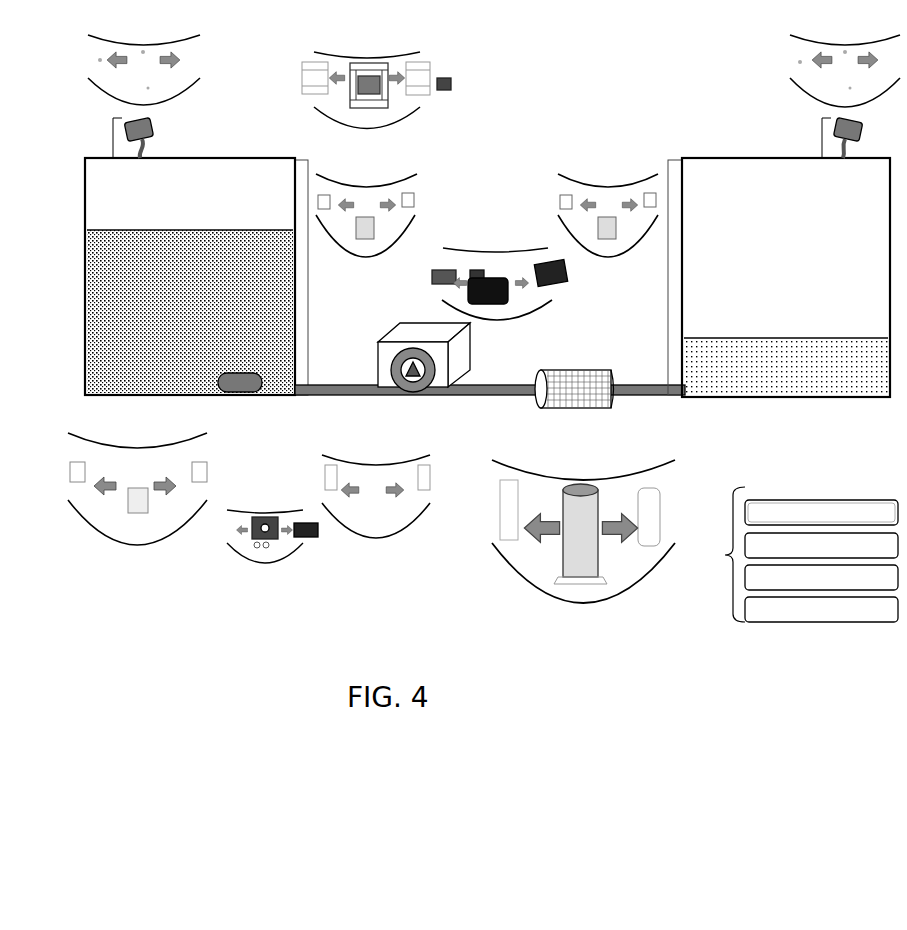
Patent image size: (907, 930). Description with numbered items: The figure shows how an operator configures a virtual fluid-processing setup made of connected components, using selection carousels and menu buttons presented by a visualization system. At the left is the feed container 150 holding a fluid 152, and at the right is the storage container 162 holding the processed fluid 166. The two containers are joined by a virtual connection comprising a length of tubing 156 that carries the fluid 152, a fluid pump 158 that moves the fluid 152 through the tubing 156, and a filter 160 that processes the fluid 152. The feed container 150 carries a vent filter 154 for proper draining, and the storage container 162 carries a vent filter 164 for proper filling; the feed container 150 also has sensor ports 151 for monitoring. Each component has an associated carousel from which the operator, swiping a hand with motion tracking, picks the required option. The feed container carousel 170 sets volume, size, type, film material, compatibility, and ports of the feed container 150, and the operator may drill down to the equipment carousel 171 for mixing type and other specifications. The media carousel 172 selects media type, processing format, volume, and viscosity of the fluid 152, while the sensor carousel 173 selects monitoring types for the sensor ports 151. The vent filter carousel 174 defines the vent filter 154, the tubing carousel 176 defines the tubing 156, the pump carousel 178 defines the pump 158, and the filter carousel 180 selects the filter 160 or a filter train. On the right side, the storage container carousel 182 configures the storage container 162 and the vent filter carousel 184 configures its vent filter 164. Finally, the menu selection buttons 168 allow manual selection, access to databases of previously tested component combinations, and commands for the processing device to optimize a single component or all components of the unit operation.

The feed container 150 is at (310, 275).
The sensor ports 151 is at (242, 394).
The fluid 152 is at (137, 334).
The vent filter 154 is at (113, 135).
The tubing 156 is at (362, 400).
The fluid pump 158 is at (410, 316).
The filter 160 is at (610, 420).
The storage container 162 is at (668, 279).
The vent filter 164 is at (822, 138).
The processed fluid 166 is at (816, 377).
The menu selection buttons 168 is at (727, 556).
The feed container carousel 170 is at (363, 180).
The equipment carousel 171 is at (367, 45).
The media carousel 172 is at (104, 548).
The sensor carousel 173 is at (272, 553).
The vent filter carousel 174 is at (210, 58).
The tubing carousel 176 is at (380, 549).
The pump carousel 178 is at (492, 242).
The filter carousel 180 is at (513, 595).
The storage container carousel 182 is at (607, 180).
The vent filter carousel 184 is at (770, 58).